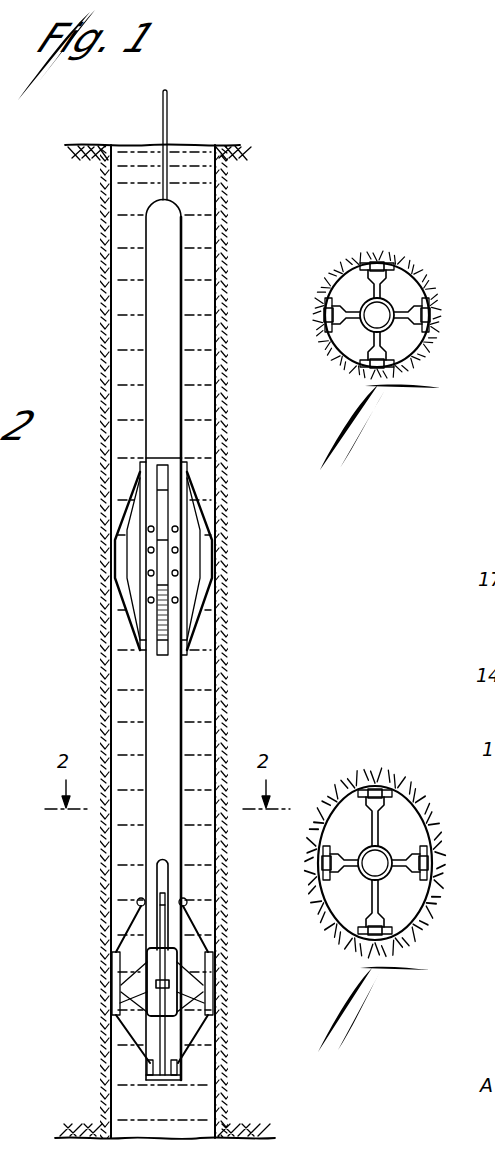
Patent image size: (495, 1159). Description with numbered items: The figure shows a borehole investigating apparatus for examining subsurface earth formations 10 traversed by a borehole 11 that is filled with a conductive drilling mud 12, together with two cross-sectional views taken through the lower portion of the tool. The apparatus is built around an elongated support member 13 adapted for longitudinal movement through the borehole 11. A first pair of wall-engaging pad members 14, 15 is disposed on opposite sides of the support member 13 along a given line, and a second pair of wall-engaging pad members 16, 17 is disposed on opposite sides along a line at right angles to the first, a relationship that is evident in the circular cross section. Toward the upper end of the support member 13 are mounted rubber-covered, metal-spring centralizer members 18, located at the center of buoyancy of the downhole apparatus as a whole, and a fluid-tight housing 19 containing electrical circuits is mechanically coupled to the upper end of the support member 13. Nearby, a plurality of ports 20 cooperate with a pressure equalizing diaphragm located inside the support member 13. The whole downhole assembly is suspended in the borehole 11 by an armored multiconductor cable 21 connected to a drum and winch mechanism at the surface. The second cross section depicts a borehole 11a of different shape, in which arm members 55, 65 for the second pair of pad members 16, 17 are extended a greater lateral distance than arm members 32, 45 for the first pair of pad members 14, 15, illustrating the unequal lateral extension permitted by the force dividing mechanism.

In FIG. 1, the subsurface earth formations 10 is at (98, 300).
In FIG. 1, the borehole 11 is at (118, 336).
In FIG. 2, the borehole 11 is at (348, 275).
In FIG. 2A, the elliptical borehole wall 11a is at (351, 808).
In FIG. 1, the drilling mud 12 is at (127, 265).
In FIG. 1, the elongated support member 13 is at (145, 690).
In FIG. 2, the elongated support member 13 is at (395, 298).
In FIG. 2A, the elongated support member 13 is at (393, 848).
In FIG. 1, the wall-engaging pad member 14 is at (110, 1005).
In FIG. 2, the wall-engaging pad member 14 is at (325, 317).
In FIG. 2A, the wall-engaging pad member 14 is at (322, 862).
In FIG. 1, the wall-engaging pad member 15 is at (212, 1005).
In FIG. 2, the wall-engaging pad member 15 is at (428, 318).
In FIG. 2A, the wall-engaging pad member 15 is at (432, 856).
In FIG. 1, the wall-engaging pad member 16 is at (168, 963).
In FIG. 2, the wall-engaging pad member 16 is at (375, 372).
In FIG. 2A, the wall-engaging pad member 16 is at (378, 948).
In FIG. 2, the wall-engaging pad member 17 is at (375, 257).
In FIG. 2A, the wall-engaging pad member 17 is at (375, 786).
In FIG. 1, the centralizer members 18 is at (123, 556).
In FIG. 1, the fluid-tight housing 19 is at (145, 413).
In FIG. 1, the ports 20 is at (176, 577).
In FIG. 1, the armored multiconductor cable 21 is at (168, 98).
In FIG. 2A, the arm member 32 is at (350, 850).
In FIG. 2A, the arm member 45 is at (405, 875).
In FIG. 2A, the arm member 55 is at (380, 900).
In FIG. 2A, the arm member 65 is at (378, 822).